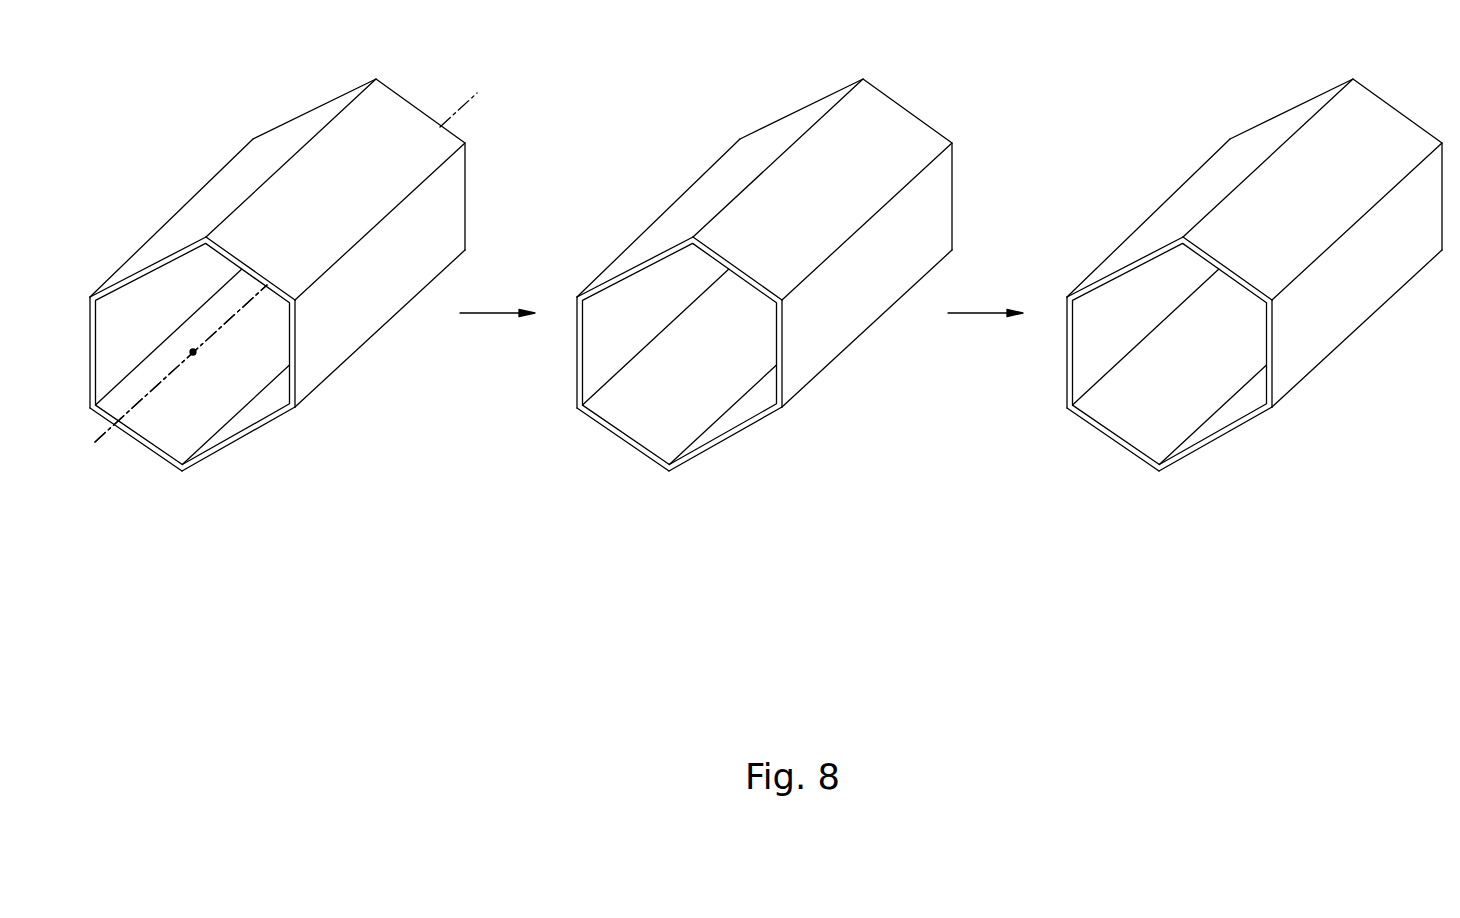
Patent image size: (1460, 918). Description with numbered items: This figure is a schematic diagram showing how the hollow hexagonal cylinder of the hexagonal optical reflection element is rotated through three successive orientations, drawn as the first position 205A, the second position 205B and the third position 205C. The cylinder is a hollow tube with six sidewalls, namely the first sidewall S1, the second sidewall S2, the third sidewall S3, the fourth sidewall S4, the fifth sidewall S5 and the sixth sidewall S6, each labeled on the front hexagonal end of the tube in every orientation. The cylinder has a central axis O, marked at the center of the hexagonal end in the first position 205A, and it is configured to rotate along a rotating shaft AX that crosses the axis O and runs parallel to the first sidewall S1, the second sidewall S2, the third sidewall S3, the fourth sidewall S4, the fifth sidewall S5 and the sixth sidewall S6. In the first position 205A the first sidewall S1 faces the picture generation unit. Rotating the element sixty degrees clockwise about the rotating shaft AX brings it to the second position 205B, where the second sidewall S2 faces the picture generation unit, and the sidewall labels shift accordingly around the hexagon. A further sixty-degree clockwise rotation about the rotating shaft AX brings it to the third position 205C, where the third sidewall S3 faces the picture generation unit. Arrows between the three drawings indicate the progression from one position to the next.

The first position 205A is at (142, 50).
The second position 205B is at (629, 50).
The third position 205C is at (1119, 50).
The first sidewall S1 is at (94, 352).
The second sidewall S2 is at (137, 440).
The third sidewall S3 is at (242, 440).
The fourth sidewall S4 is at (297, 343).
The fifth sidewall S5 is at (237, 256).
The sixth sidewall S6 is at (153, 262).
The axis O is at (199, 370).
The rotating shaft AX is at (111, 427).